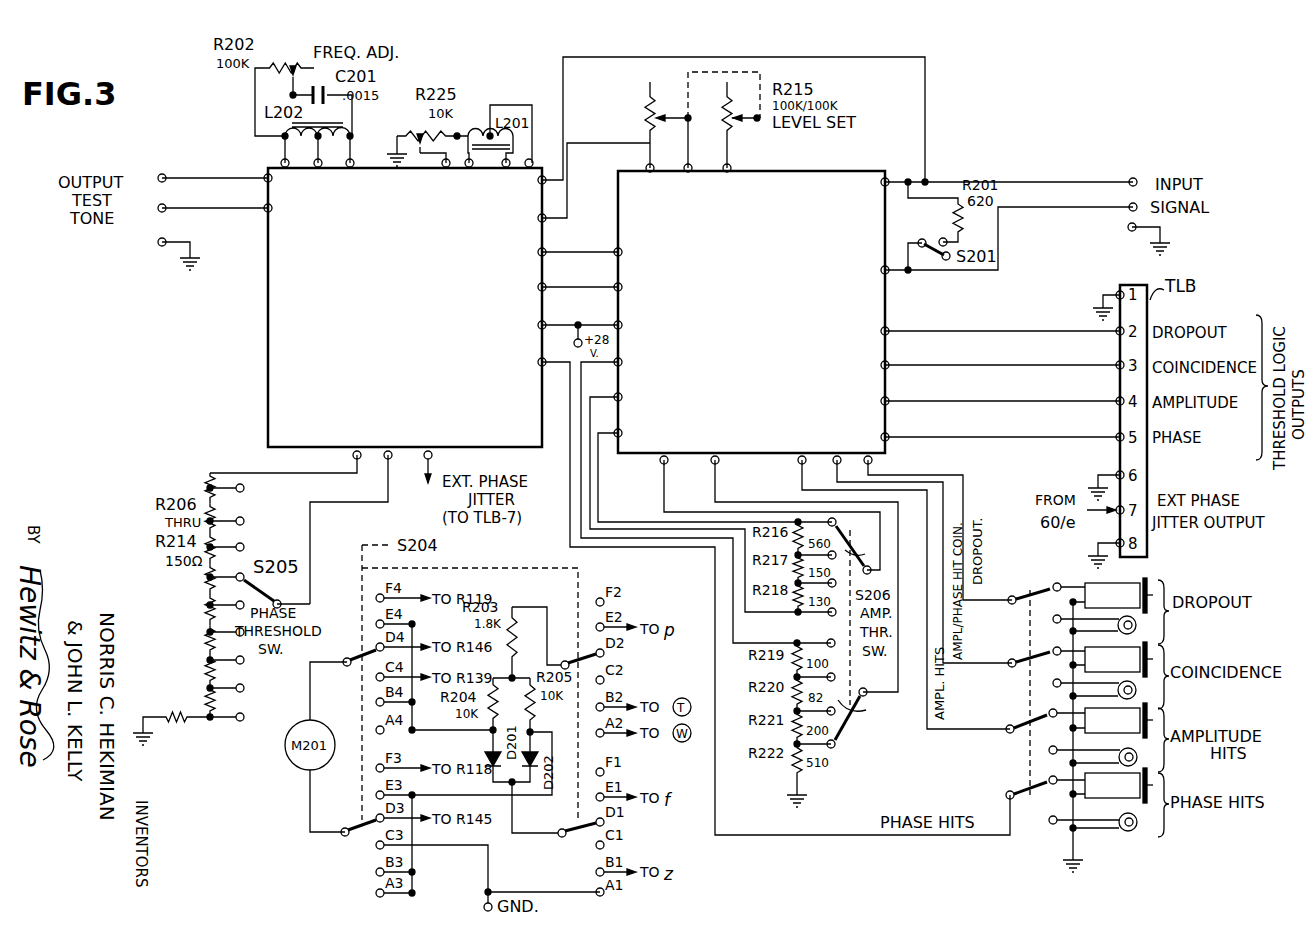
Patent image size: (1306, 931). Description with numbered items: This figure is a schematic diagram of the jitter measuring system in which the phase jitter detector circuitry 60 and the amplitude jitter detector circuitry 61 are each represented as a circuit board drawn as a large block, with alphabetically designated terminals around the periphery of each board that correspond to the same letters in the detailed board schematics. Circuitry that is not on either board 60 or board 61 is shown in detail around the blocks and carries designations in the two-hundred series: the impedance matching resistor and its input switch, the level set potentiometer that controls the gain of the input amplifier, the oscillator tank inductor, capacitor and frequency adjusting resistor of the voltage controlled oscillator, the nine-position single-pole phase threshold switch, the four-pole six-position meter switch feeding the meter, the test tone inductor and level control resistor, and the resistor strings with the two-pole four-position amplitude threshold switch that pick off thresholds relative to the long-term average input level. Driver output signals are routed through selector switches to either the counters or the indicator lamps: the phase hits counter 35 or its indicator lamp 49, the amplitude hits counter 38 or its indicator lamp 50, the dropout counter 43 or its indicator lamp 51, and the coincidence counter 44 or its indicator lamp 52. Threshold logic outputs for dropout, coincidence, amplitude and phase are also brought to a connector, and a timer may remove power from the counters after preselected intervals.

The phase jitter detector circuitry 60 is at (407, 308).
The amplitude jitter detector circuitry 61 is at (751, 314).
The counter 43 is at (1107, 595).
The counter 44 is at (1107, 659).
The amplitude hits counter 38 is at (1105, 720).
The counter 35 is at (1105, 785).
The indicator lamp 51 is at (1136, 630).
The indicator lamp 52 is at (1136, 695).
The indicator lamp 50 is at (1137, 762).
The indicator lamp 49 is at (1137, 828).